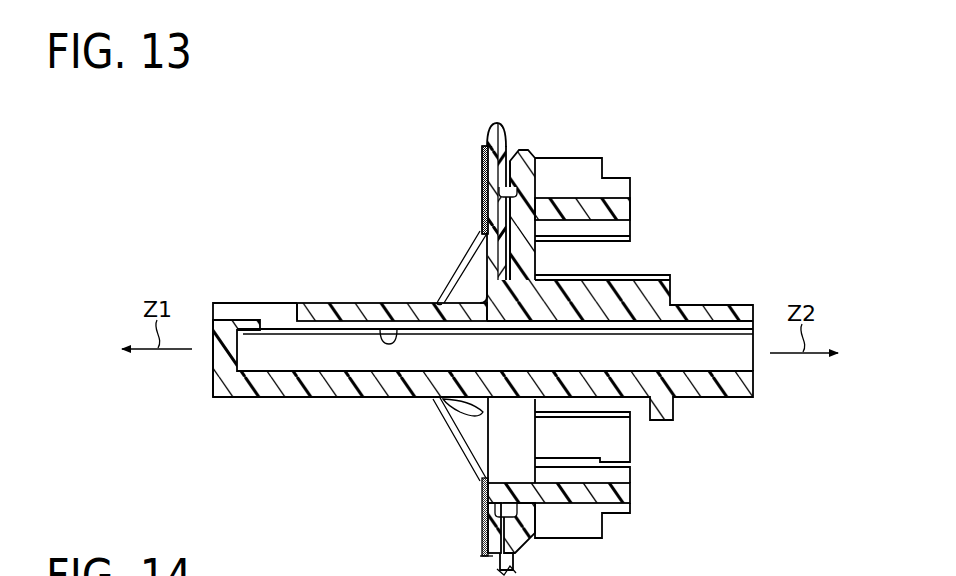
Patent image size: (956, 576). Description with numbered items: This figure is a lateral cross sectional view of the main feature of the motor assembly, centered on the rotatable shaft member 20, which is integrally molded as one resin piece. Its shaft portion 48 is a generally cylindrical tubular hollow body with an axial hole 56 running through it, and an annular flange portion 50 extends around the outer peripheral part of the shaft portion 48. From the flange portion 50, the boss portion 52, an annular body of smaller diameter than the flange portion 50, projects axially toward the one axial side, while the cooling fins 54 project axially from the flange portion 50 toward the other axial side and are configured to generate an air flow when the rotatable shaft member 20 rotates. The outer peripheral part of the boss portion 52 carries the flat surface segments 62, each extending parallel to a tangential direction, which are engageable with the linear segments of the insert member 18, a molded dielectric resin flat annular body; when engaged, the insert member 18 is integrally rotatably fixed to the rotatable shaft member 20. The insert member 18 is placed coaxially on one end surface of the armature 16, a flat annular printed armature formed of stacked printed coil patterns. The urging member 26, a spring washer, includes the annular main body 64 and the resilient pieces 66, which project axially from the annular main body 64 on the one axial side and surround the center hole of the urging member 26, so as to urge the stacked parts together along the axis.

The armature 16 is at (522, 137).
The insert member 18 is at (488, 140).
The rotatable shaft member 20 is at (331, 301).
The urging member 26 is at (443, 272).
The shaft portion 48 is at (267, 302).
The flange portion 50 is at (519, 147).
The boss portion 52 is at (480, 228).
The cooling fins 54 is at (632, 228).
The axial hole 56 is at (380, 329).
The flat surface segments 62 is at (483, 164).
The annular main body 64 is at (482, 147).
The resilient pieces 66 is at (465, 253).